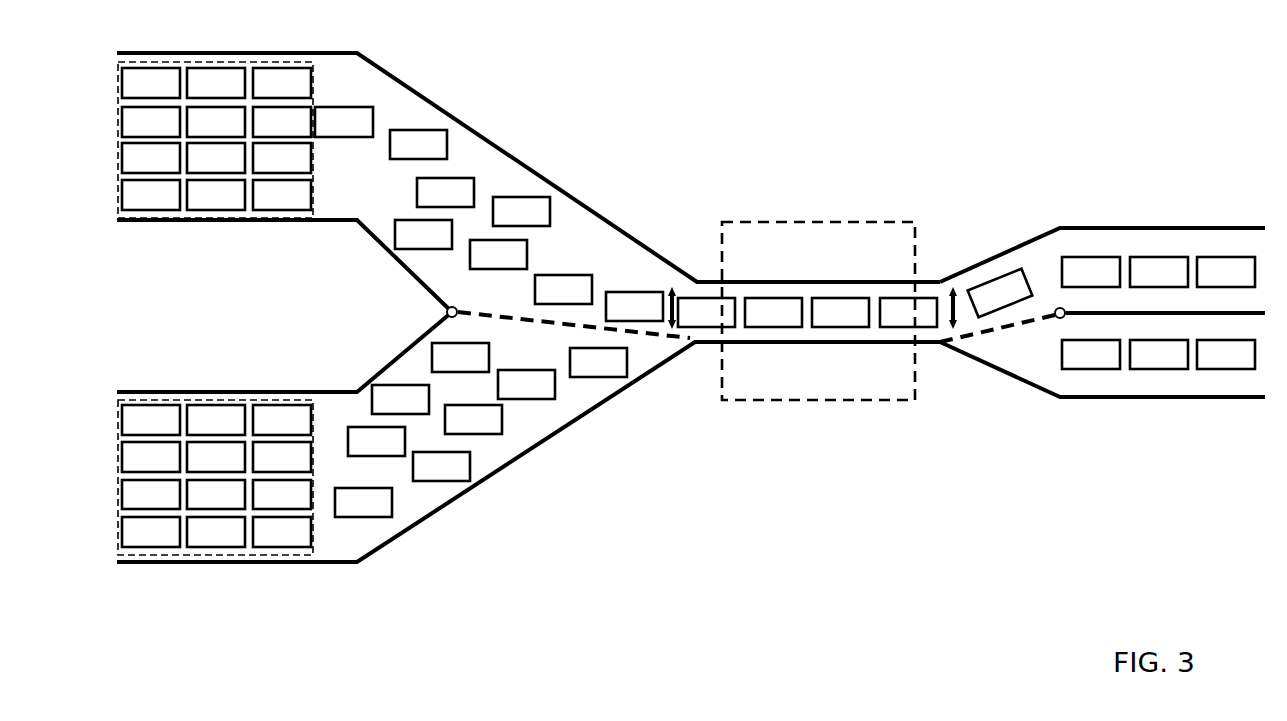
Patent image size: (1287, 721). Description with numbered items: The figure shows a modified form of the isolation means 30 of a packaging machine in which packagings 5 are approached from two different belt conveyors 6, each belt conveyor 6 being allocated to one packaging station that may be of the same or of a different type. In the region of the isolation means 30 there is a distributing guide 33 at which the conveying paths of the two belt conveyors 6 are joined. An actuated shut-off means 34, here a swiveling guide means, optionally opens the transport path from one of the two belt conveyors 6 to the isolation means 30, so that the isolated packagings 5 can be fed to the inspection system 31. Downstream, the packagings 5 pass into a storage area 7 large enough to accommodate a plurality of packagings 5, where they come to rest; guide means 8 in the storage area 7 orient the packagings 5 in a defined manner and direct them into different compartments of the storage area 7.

The packaging 5 is at (362, 107).
The belt conveyor 6 is at (332, 63).
The storage area 7 is at (1120, 228).
The guide means 8 is at (992, 335).
The isolation means 30 is at (603, 220).
The inspection system 31 is at (882, 222).
The distributing guide 33 is at (622, 399).
The shut-off means 34 is at (598, 328).